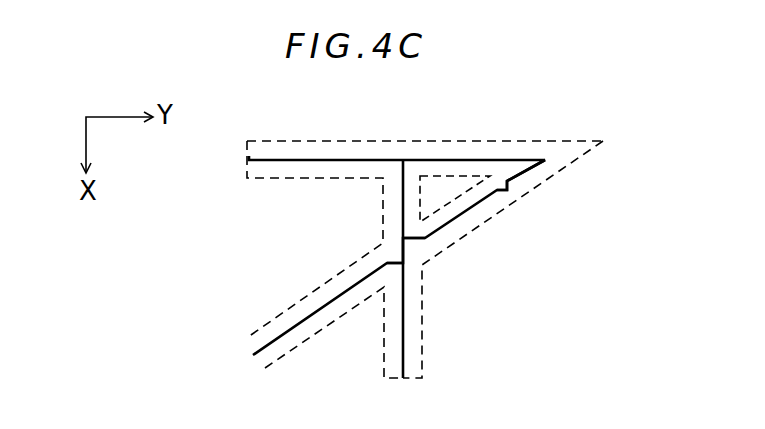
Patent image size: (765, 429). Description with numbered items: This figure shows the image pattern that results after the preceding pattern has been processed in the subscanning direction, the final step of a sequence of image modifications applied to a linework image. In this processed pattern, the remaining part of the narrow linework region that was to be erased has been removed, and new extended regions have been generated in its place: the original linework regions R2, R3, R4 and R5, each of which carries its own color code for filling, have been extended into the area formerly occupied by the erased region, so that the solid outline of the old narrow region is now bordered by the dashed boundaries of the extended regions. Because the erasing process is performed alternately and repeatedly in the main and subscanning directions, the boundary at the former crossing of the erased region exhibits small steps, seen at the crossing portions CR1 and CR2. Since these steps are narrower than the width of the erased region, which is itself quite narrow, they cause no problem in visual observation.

The linework region R2 is at (563, 277).
The linework region R3 is at (312, 236).
The linework region R4 is at (357, 371).
The linework region R5 is at (452, 202).
The crossing portion CR1 is at (510, 185).
The crossing portion CR2 is at (411, 249).